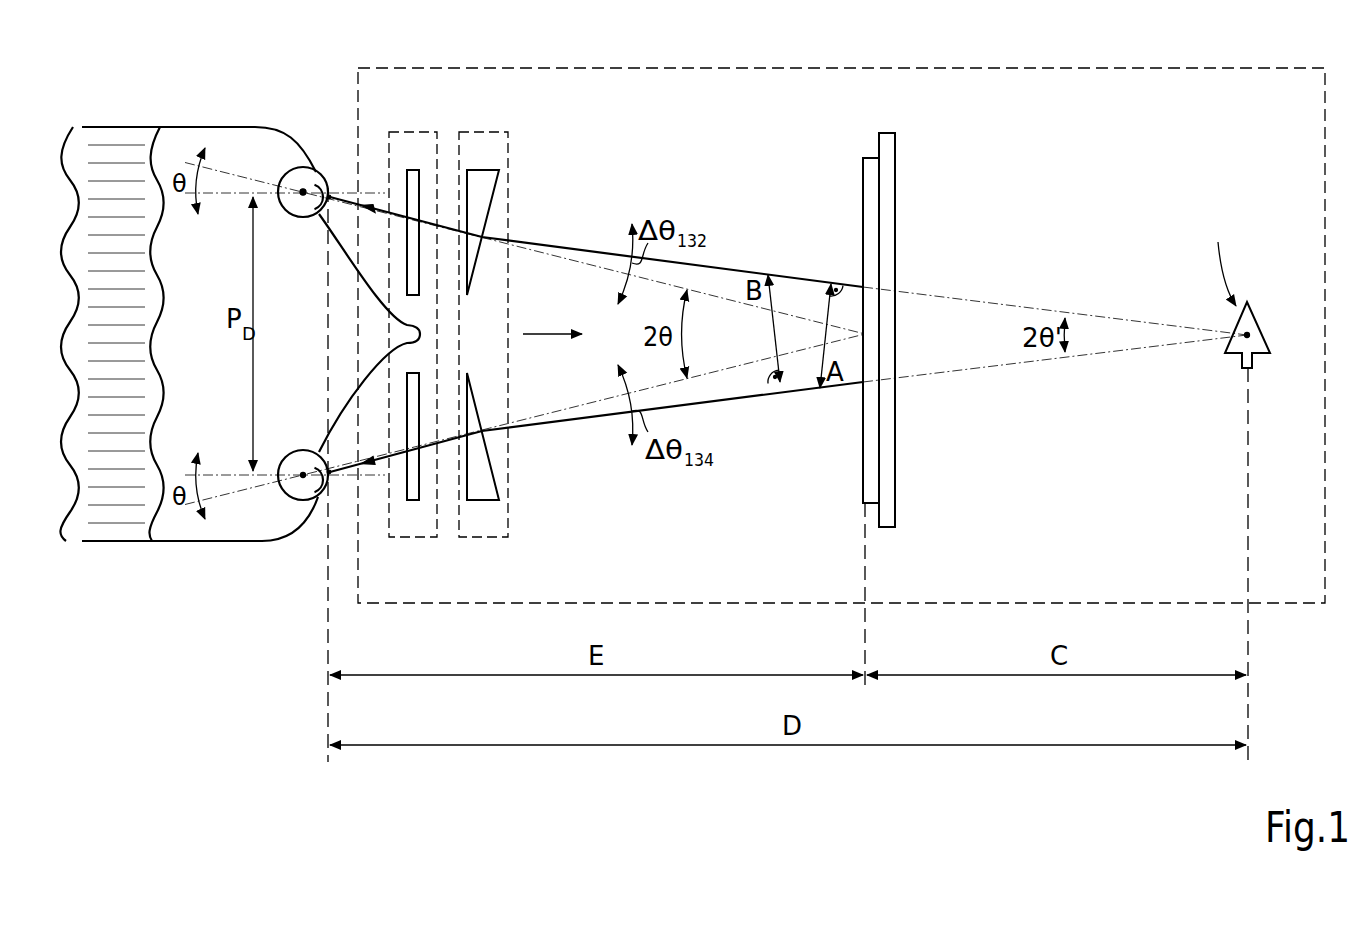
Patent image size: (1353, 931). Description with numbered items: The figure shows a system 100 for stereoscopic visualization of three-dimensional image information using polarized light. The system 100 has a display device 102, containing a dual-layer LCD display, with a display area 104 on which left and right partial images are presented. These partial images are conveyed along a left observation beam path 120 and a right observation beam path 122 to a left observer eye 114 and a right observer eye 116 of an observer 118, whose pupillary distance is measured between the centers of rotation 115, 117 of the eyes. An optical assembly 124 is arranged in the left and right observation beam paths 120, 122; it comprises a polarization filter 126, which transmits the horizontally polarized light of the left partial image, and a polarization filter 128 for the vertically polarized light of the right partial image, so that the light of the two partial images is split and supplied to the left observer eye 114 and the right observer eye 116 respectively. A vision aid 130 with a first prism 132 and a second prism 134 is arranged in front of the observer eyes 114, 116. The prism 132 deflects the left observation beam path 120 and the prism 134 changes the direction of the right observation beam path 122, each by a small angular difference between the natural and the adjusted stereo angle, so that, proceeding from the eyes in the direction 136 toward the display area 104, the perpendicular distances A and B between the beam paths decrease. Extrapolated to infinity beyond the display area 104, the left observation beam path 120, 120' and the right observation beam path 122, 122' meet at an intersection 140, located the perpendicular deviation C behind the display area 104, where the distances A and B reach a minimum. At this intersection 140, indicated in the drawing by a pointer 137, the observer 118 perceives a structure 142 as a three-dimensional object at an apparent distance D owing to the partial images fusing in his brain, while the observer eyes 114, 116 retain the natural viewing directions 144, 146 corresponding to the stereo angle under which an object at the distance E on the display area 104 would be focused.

The system for stereoscopic visualization 100 is at (1157, 68).
The display device 102 is at (895, 168).
The display area 104 is at (863, 168).
The left observer eye 114 is at (296, 217).
The center of rotation of left eye 115 is at (302, 190).
The right observer eye 116 is at (297, 452).
The center of rotation of right eye 117 is at (259, 541).
The observer 118 is at (175, 541).
The left observation beam path 120 is at (596, 242).
The extrapolated left observation beam path 120' is at (1055, 287).
The right observation beam path 122 is at (596, 427).
The extrapolated right observation beam path 122' is at (1055, 385).
The optical assembly 124 is at (400, 132).
The polarization filter 126 is at (413, 170).
The polarization filter 128 is at (413, 500).
The vision aid 130 is at (473, 132).
The first prism 132 is at (487, 170).
The second prism 134 is at (487, 500).
The direction toward display area 136 is at (546, 330).
The virtual object position indicator 137 is at (1221, 260).
The intersection 140 is at (1249, 332).
The structure 142 is at (1253, 368).
The viewing direction of left eye 144 is at (348, 192).
The viewing direction of right eye 146 is at (318, 524).